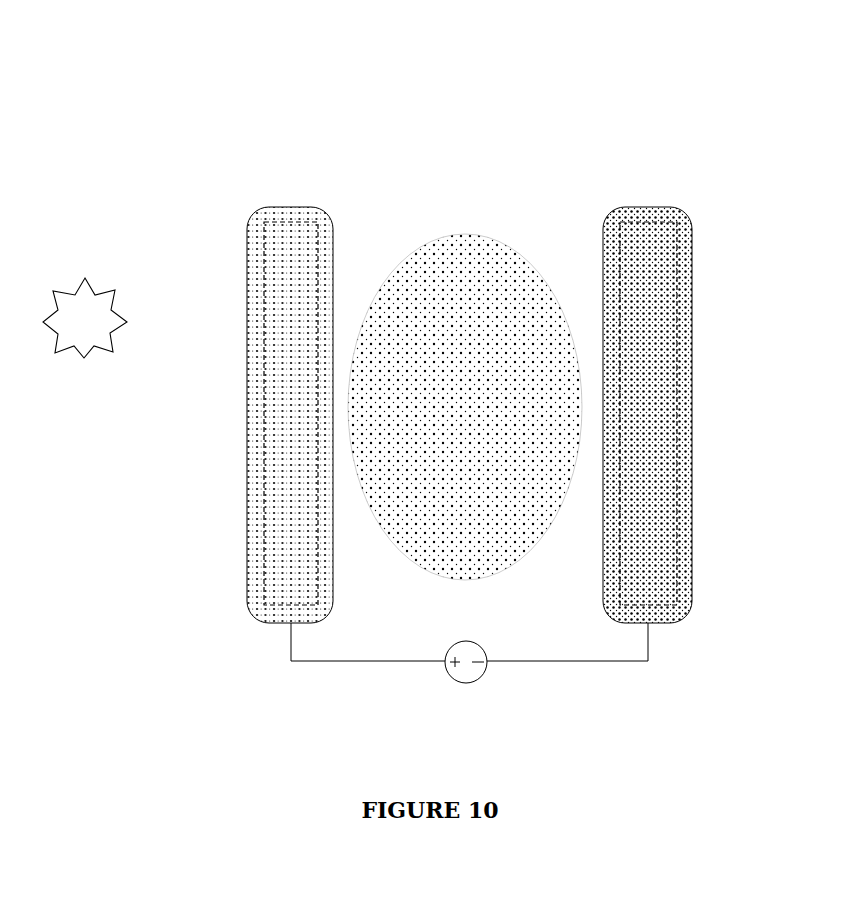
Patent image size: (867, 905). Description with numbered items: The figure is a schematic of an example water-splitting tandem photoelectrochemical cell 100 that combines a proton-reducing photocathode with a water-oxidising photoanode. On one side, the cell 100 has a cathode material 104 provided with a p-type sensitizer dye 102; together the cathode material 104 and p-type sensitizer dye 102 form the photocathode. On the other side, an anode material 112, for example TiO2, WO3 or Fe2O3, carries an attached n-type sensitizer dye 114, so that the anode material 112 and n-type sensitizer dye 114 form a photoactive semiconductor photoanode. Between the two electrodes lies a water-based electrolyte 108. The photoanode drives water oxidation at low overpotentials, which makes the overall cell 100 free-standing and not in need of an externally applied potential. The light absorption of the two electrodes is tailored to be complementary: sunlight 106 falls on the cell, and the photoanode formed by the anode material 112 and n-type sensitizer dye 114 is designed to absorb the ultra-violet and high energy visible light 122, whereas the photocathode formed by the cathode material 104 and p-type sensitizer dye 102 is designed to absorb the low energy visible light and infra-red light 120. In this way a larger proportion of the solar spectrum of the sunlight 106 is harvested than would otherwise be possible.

The water-splitting photoelectrochemical cell 100 is at (452, 88).
The p-type sensitizer dye 102 is at (645, 207).
The cathode material 104 is at (672, 412).
The sunlight 106 is at (85, 318).
The water-based electrolyte 108 is at (465, 407).
The anode material 112 is at (265, 476).
The n-type sensitizer dye 114 is at (291, 207).
The low energy visible light and infra-red light 120 is at (640, 354).
The ultra-violet and high energy visible light 122 is at (272, 300).